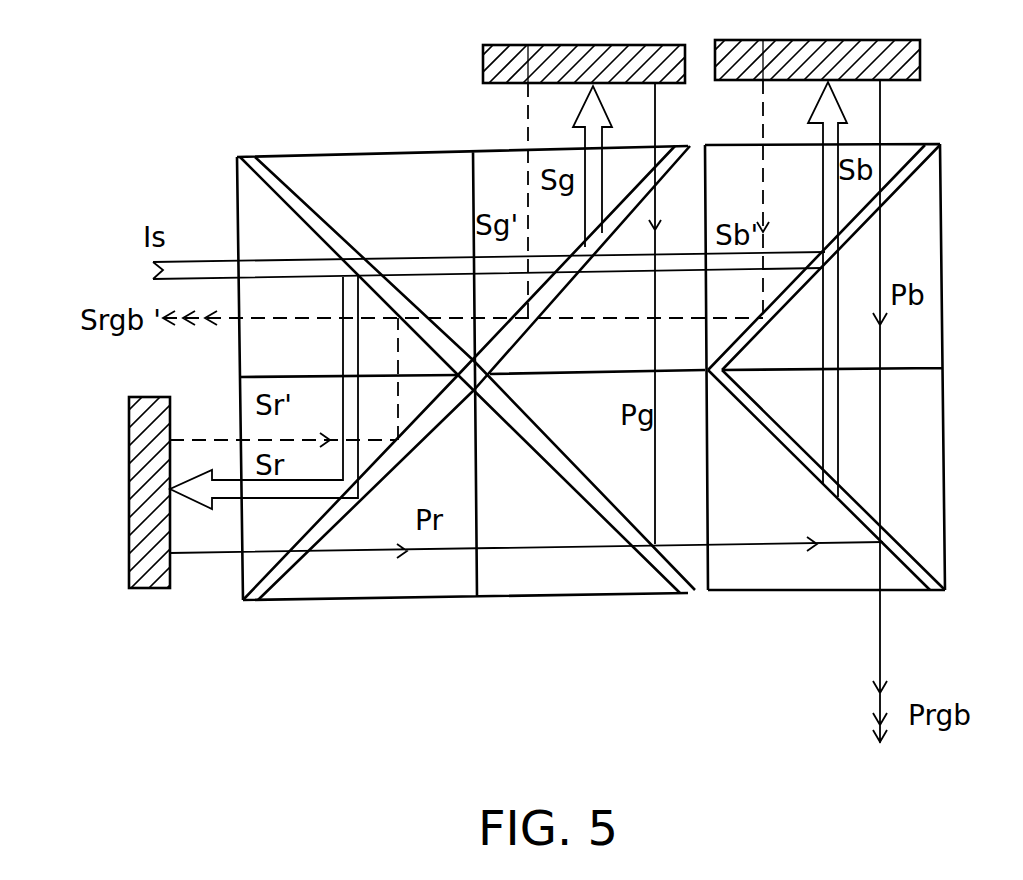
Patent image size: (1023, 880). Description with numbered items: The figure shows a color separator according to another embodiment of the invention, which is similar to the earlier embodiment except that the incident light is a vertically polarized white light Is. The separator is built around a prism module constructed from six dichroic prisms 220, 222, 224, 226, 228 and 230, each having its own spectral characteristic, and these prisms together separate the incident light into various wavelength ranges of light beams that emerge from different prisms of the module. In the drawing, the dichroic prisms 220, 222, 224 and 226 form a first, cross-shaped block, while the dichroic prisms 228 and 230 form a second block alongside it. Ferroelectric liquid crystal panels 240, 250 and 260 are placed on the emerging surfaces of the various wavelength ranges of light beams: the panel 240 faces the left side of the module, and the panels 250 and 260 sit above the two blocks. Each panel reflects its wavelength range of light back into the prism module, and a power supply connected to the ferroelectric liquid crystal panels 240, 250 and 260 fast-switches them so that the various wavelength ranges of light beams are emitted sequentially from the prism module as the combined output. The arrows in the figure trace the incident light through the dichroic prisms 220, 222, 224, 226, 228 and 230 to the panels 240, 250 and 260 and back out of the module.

The dichroic prism 220 is at (383, 152).
The dichroic prism 222 is at (390, 600).
The dichroic prism 224 is at (508, 150).
The dichroic prism 226 is at (595, 596).
The dichroic prism 228 is at (897, 143).
The dichroic prism 230 is at (778, 593).
The ferroelectric liquid crystal panel 240 is at (138, 395).
The ferroelectric liquid crystal panel 250 is at (680, 42).
The ferroelectric liquid crystal panel 260 is at (915, 38).